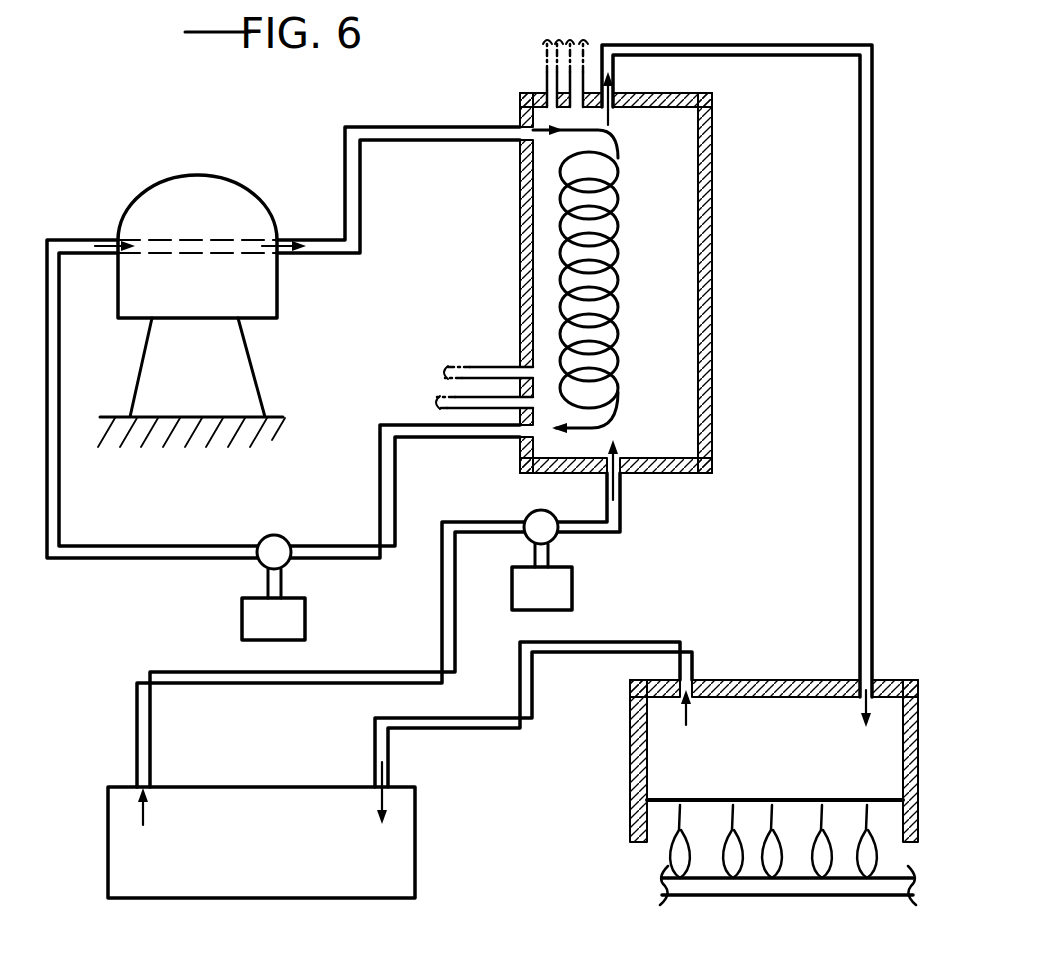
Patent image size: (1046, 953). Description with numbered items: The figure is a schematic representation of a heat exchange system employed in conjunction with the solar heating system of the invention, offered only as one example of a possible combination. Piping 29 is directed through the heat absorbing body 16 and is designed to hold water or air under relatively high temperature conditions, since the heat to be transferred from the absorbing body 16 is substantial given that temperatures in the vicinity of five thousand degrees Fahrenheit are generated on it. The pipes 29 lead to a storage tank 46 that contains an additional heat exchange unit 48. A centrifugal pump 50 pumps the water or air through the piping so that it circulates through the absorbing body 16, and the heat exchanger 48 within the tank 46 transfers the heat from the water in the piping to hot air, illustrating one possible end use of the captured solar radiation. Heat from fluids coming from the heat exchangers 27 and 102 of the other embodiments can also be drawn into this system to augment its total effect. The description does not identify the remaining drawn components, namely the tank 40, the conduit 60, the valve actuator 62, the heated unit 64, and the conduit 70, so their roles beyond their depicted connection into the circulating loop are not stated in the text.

The heat absorbing body 16 is at (210, 175).
The heat exchanger 27 is at (545, 60).
The piping 29 is at (166, 562).
The storage tank 40 is at (240, 900).
The storage tank 46 is at (712, 196).
The heat exchange unit 48 is at (617, 262).
The centrifugal pump 50 is at (306, 620).
The heating fluid conduit 60 is at (760, 45).
The valve actuator 62 is at (574, 592).
The boiler 64 is at (782, 712).
The return conduit 70 is at (402, 851).
The heat exchanger 102 is at (585, 46).